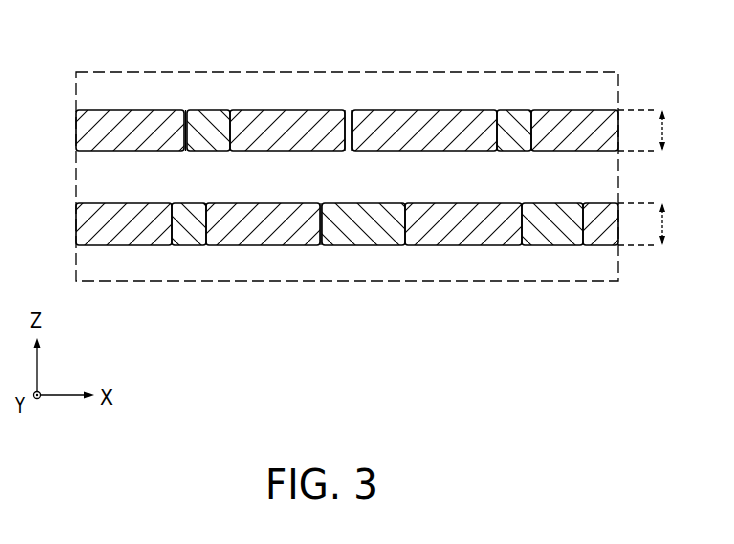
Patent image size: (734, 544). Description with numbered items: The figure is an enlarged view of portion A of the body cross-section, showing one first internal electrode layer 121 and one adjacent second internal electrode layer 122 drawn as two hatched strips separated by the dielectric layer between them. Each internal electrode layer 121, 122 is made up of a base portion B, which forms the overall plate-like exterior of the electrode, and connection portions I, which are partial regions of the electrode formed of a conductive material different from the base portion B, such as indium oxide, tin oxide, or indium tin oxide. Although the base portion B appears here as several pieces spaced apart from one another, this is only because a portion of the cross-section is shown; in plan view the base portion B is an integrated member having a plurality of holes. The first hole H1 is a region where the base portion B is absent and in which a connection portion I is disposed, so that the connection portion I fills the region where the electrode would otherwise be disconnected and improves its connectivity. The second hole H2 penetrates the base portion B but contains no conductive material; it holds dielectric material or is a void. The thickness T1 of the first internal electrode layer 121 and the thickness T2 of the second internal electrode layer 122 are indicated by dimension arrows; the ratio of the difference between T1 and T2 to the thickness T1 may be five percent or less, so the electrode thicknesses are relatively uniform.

The first internal electrode layer 121 is at (132, 92).
The second internal electrode layer 122 is at (131, 258).
The first hole H1 is at (183, 119).
The second hole H2 is at (346, 128).
The base portion B is at (425, 118).
The connection portion I is at (516, 120).
The thickness of the first internal electrode layer T1 is at (657, 131).
The thickness of the second internal electrode layer T2 is at (658, 224).
The portion A is at (356, 384).